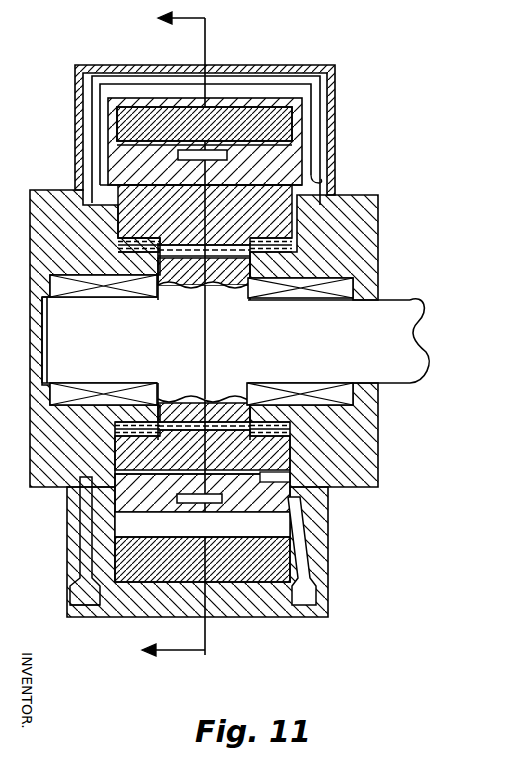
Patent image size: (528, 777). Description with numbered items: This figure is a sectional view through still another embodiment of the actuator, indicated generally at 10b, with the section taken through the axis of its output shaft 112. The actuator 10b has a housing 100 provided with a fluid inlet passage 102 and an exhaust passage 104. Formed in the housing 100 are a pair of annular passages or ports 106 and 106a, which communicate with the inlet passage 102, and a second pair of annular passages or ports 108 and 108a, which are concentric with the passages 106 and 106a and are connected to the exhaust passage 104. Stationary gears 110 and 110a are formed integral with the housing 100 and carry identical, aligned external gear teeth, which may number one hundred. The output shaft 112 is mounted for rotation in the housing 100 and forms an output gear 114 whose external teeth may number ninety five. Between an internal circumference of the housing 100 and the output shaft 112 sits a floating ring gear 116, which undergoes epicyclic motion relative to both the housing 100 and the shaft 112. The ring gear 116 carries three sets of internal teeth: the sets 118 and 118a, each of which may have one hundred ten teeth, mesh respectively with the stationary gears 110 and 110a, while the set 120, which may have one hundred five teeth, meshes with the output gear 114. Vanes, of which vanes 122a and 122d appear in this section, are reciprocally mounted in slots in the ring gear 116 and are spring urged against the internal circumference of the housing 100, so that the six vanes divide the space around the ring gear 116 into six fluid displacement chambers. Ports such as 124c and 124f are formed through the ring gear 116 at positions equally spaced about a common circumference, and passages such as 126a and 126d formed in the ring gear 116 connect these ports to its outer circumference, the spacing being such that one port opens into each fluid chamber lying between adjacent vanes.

The actuator 10b is at (380, 242).
The housing 100 is at (378, 442).
The fluid inlet passage 102 is at (88, 608).
The exhaust passage 104 is at (298, 602).
The annular passage 106 is at (78, 175).
The annular passage 106a is at (328, 194).
The annular passage 108 is at (88, 152).
The annular passage 108a is at (330, 172).
The stationary gear 110 is at (118, 264).
The stationary gear 110a is at (291, 262).
The output shaft 112 is at (338, 355).
The output gear 114 is at (229, 267).
The floating ring gear 116 is at (272, 176).
The internal teeth 118 is at (118, 240).
The internal teeth 118a is at (291, 240).
The internal teeth 120 is at (210, 214).
The vane 122a is at (272, 140).
The vane 122d is at (258, 569).
The port 124c is at (272, 477).
The port 124f is at (267, 188).
The passage 126a is at (178, 156).
The passage 126d is at (222, 498).